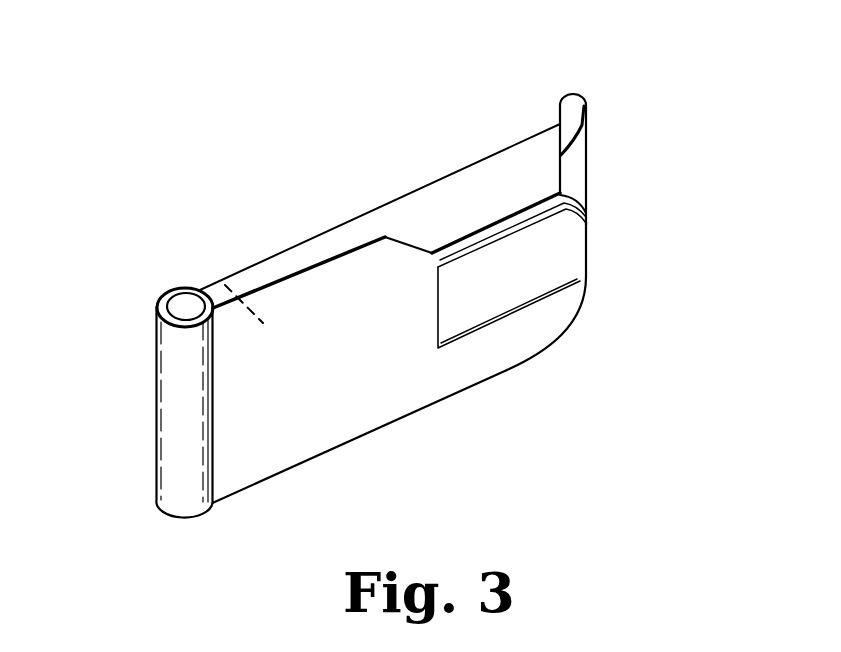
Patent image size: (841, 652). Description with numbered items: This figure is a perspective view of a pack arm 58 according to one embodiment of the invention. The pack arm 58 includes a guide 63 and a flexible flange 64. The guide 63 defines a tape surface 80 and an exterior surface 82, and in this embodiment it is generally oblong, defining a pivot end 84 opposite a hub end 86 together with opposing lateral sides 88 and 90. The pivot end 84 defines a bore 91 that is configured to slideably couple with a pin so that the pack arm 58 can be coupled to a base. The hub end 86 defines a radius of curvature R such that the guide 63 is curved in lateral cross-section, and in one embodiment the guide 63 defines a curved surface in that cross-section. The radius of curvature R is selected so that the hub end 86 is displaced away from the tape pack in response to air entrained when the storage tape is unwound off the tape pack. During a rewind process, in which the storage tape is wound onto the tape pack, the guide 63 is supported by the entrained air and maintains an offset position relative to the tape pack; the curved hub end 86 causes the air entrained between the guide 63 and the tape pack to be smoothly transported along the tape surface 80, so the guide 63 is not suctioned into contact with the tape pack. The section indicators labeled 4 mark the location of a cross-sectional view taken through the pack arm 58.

The pack arm 58 is at (365, 279).
The pivot end 84 is at (138, 403).
The bore 91 is at (185, 308).
The lateral side 88 is at (375, 223).
The exterior surface 82 is at (223, 282).
The tape surface 80 is at (438, 381).
The lateral side 90 is at (310, 458).
The hub end 86 is at (578, 305).
The flexible flange 64 is at (543, 187).
The guide 63 is at (597, 122).
The radius of curvature R is at (552, 112).
The section line 4- 4 is at (503, 167).